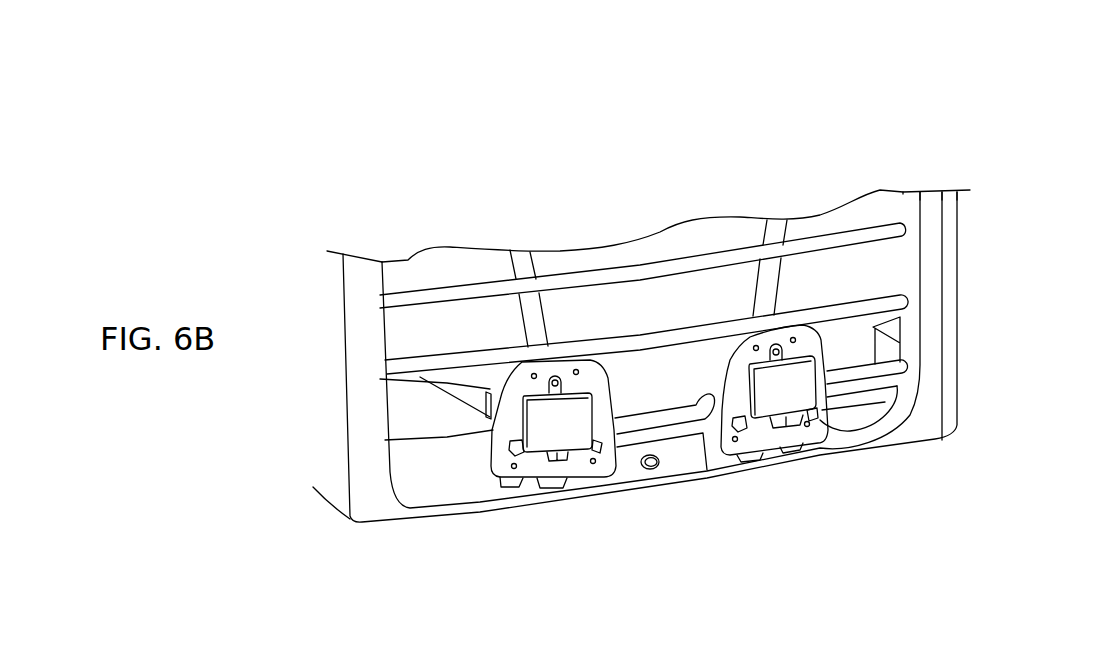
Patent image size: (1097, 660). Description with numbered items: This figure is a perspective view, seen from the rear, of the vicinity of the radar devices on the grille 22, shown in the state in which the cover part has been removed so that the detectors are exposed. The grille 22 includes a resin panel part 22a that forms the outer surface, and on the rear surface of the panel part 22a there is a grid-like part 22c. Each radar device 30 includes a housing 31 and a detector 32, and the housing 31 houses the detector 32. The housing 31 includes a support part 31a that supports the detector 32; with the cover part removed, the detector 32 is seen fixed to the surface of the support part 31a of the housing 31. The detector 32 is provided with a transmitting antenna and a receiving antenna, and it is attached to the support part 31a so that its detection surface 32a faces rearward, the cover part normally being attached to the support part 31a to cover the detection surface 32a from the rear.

The grille 22 is at (410, 252).
The panel part 22a is at (937, 240).
The grid-like part 22c is at (681, 254).
The radar device 30 is at (555, 347).
The housing 31 is at (507, 474).
The support part 31a is at (507, 425).
The detector 32 is at (550, 433).
The detection surface 32a is at (573, 441).